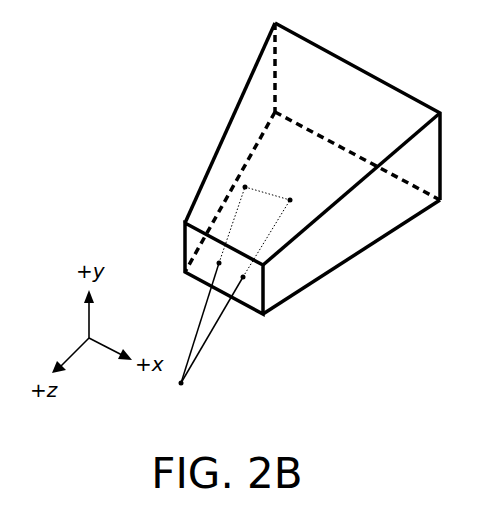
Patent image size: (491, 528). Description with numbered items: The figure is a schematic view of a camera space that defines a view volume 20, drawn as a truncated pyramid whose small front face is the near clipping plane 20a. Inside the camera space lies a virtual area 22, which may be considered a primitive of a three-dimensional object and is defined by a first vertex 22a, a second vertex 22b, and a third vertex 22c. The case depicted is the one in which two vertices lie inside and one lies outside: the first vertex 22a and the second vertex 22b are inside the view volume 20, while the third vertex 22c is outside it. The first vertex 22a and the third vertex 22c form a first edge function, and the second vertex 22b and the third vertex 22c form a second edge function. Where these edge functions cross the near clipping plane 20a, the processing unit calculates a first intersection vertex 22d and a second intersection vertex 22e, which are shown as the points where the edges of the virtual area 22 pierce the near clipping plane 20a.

The view volume 20 is at (248, 84).
The near clipping plane 20a is at (252, 297).
The virtual area 22 is at (193, 340).
The first vertex 22a is at (245, 187).
The second vertex 22b is at (290, 200).
The third vertex 22c is at (182, 383).
The first intersection vertex 22d is at (218, 263).
The second intersection vertex 22e is at (243, 277).